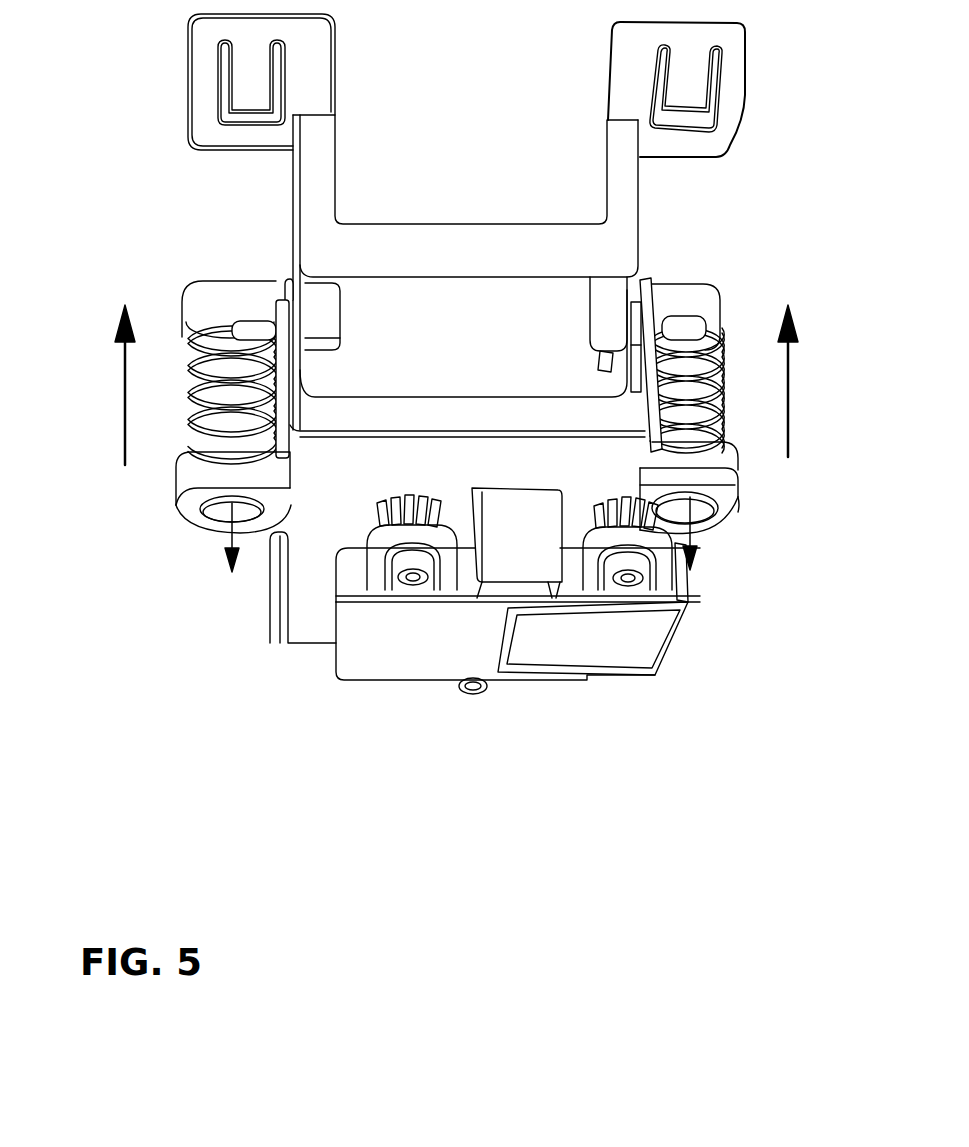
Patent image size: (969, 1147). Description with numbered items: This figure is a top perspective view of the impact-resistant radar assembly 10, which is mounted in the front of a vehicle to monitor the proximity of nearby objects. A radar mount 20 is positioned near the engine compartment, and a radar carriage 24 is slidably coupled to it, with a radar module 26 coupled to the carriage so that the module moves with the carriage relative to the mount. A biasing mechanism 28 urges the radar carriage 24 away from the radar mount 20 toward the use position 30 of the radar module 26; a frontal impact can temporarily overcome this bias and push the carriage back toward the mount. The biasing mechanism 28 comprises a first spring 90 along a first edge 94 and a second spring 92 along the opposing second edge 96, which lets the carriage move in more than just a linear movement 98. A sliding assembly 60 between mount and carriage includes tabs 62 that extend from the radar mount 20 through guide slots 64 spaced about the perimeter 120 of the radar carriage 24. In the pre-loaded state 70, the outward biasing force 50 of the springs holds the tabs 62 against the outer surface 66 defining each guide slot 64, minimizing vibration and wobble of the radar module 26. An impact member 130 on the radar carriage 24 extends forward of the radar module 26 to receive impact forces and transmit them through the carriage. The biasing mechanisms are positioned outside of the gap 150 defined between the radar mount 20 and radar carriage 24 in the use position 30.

The impact-resistant radar assembly 10 is at (150, 654).
The radar mount 20 is at (399, 250).
The radar carriage 24 is at (526, 420).
The radar module 26 is at (607, 650).
The biasing mechanism 28 is at (730, 340).
The use position 30 is at (90, 501).
The outward biasing force 50 is at (222, 547).
The sliding assembly 60 is at (268, 288).
The tab 62 is at (248, 327).
The guide slot 64 is at (628, 362).
The outer surface 66 is at (640, 378).
The pre-loaded state 70 is at (168, 292).
The first spring 90 is at (195, 417).
The second spring 92 is at (730, 402).
The first edge 94 is at (283, 552).
The second edge 96 is at (737, 493).
The linear movement 98 is at (118, 382).
The perimeter 120 is at (276, 640).
The impact member 130 is at (518, 573).
The gap 150 is at (460, 366).